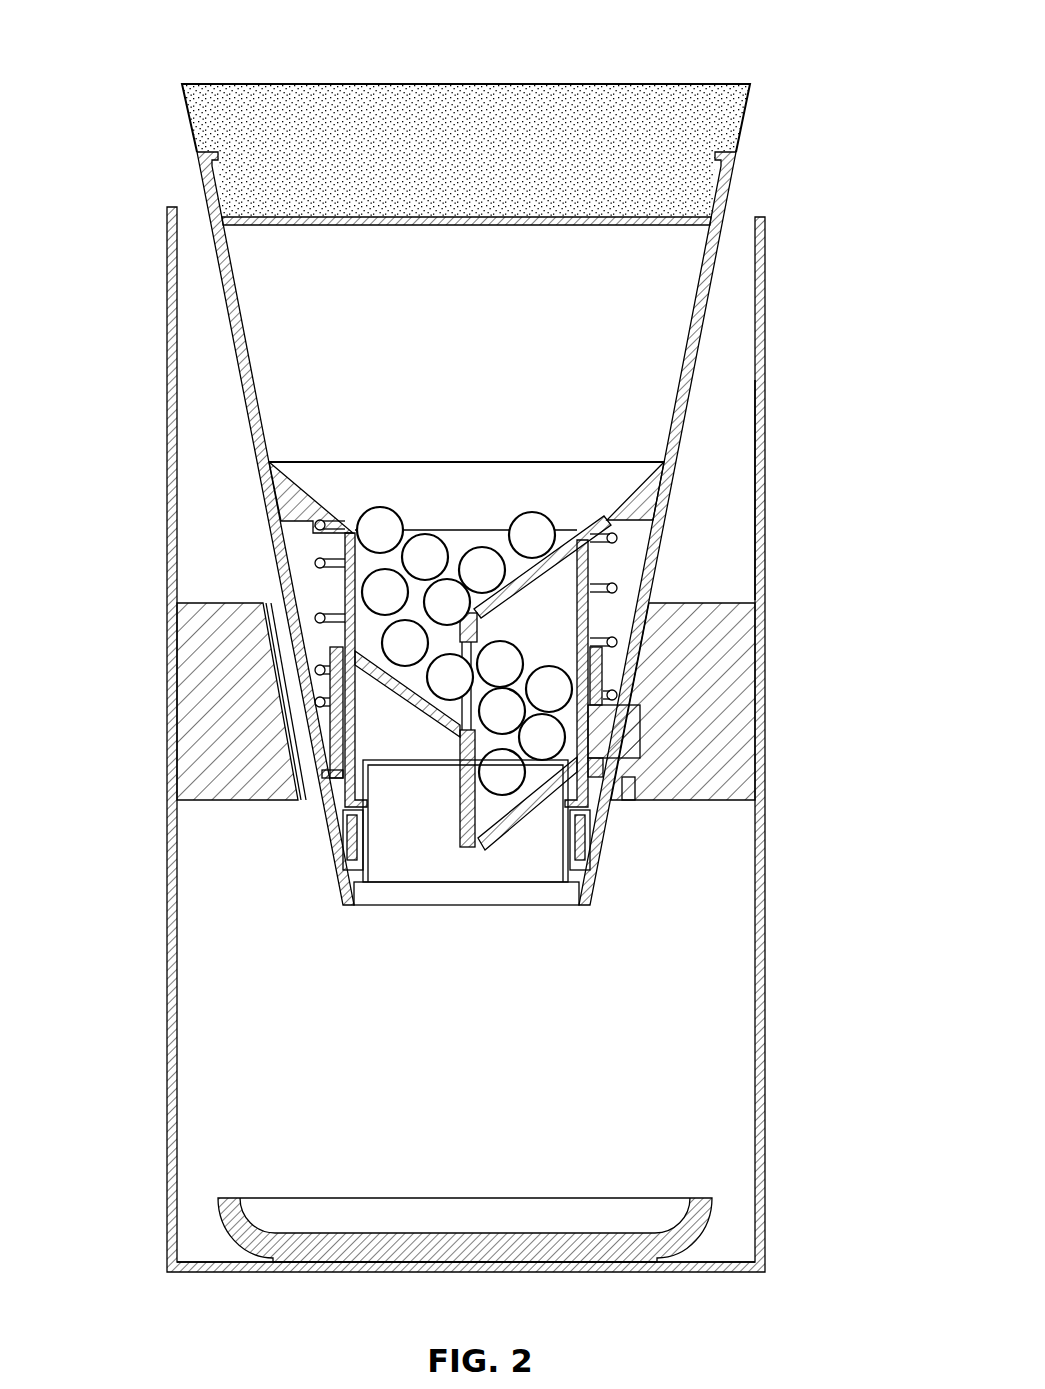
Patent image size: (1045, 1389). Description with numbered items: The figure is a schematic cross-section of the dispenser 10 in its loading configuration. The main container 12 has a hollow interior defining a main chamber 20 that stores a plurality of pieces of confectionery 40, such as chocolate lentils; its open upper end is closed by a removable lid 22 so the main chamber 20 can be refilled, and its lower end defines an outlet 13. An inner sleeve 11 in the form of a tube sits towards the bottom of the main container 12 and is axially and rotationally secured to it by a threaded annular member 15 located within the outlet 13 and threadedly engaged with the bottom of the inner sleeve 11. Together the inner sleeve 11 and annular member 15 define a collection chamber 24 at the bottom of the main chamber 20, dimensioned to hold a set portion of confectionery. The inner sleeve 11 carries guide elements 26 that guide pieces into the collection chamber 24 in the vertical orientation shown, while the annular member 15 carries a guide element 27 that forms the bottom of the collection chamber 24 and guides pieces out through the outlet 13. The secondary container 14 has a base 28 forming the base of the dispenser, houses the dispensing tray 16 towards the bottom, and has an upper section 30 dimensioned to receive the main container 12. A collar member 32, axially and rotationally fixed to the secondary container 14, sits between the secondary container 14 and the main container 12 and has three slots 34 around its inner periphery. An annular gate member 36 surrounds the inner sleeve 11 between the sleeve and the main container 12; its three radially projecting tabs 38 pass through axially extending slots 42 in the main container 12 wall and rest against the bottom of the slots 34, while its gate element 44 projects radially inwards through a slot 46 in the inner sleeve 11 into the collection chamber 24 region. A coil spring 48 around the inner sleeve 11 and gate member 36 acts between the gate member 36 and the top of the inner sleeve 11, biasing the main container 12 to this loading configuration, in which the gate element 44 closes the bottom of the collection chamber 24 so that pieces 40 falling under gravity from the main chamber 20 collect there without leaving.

The dispenser 10 is at (803, 38).
The inner sleeve 11 is at (333, 603).
The main container 12 is at (700, 334).
The outlet 13 is at (407, 870).
The secondary container 14 is at (767, 1095).
The threaded annular member 15 is at (590, 897).
The dispensing tray 16 is at (705, 1222).
The main chamber 20 is at (287, 353).
The removable lid 22 is at (661, 97).
The collection chamber 24 is at (530, 775).
The guide elements 26 is at (587, 588).
The guide element 27 is at (497, 827).
The base 28 is at (242, 1273).
The upper section 30 is at (765, 493).
The collar member 32 is at (720, 763).
The slots 34 is at (648, 727).
The gate member 36 is at (343, 693).
The tabs 38 is at (625, 748).
The pieces of confectionery 40 is at (532, 535).
The slots 42 is at (632, 655).
The gate element 44 is at (468, 822).
The slot 46 is at (403, 692).
The coil spring 48 is at (312, 563).